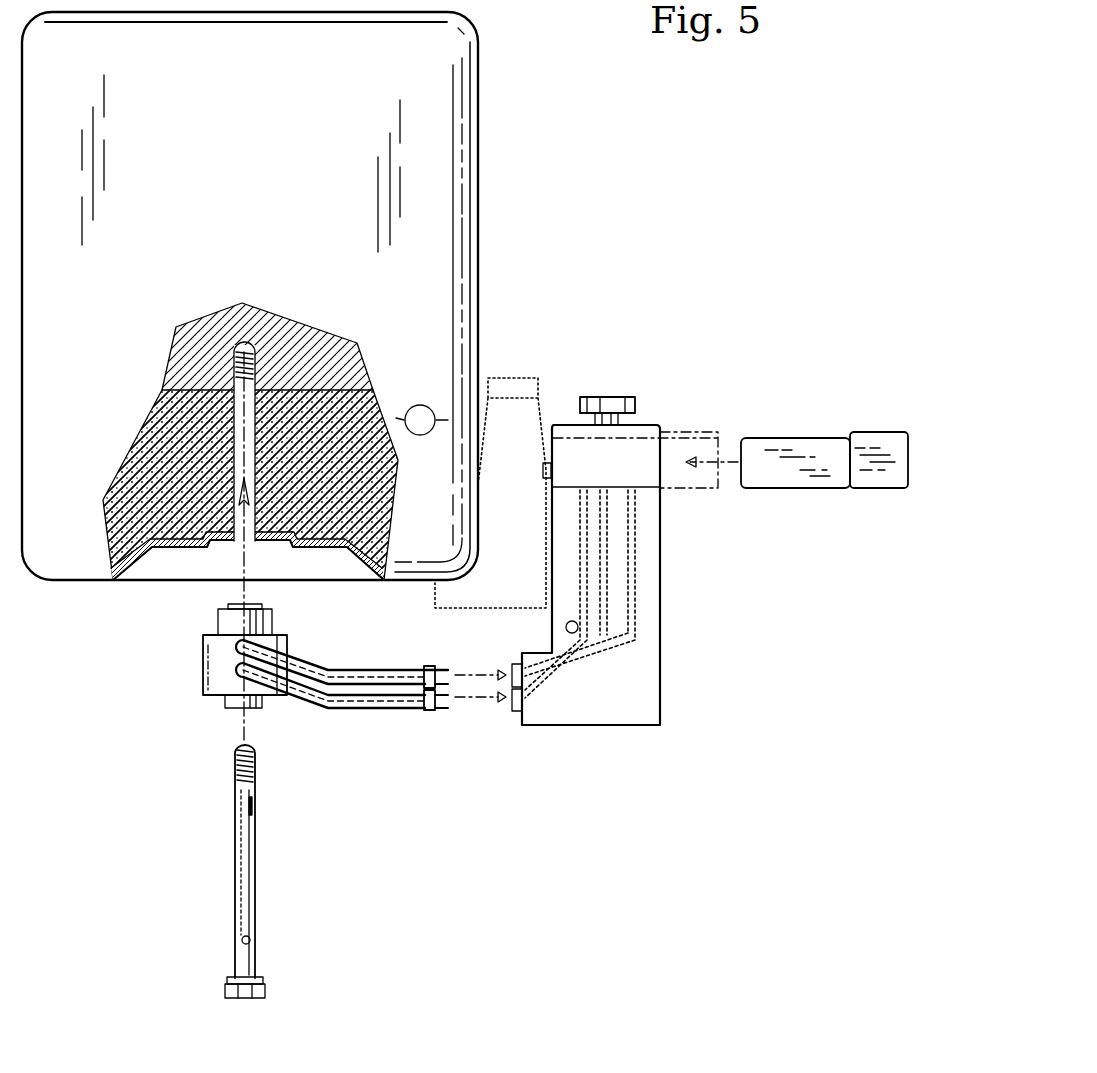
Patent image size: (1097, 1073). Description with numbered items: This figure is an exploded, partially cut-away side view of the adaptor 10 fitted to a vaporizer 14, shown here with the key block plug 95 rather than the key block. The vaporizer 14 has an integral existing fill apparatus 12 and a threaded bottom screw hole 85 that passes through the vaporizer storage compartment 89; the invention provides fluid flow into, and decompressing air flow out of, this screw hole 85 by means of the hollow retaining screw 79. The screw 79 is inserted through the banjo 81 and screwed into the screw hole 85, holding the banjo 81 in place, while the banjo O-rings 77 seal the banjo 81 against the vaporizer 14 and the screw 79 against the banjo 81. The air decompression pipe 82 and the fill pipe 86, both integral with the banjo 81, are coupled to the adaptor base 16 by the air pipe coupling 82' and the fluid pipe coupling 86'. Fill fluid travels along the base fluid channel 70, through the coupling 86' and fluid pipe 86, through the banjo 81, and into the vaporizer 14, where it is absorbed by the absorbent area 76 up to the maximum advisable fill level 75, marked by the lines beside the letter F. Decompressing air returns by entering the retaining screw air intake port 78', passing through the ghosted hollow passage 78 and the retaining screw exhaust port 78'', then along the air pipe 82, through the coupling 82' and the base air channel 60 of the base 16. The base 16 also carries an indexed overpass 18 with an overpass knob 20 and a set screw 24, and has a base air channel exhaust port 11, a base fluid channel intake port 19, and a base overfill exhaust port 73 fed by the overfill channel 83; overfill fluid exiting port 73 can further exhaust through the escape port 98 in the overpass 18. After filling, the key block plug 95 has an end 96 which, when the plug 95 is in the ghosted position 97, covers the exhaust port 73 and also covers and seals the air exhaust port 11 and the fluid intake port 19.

The adaptor 10 is at (662, 364).
The base air channel exhaust port 11 is at (628, 492).
The integral existing fill apparatus 12 is at (470, 608).
The vaporizer 14 is at (260, 111).
The adaptor base 16 is at (607, 696).
The indexed overpass 18 is at (553, 425).
The base fluid channel intake port 19 is at (605, 490).
The overpass knob 20 is at (604, 397).
The set screw 24 is at (565, 628).
The base air channel 60 is at (607, 580).
The base fluid channel 70 is at (637, 533).
The base overfill exhaust port 73 is at (582, 492).
The maximum advisable fill level 75 is at (395, 417).
The absorbent area 76 is at (110, 562).
The banjo O-rings 77 is at (228, 606).
The hollow passage 78 is at (210, 861).
The retaining screw air intake port 78' is at (293, 812).
The retaining screw exhaust port 78'' is at (293, 942).
The hollow retaining screw 79 is at (308, 882).
The banjo 81 is at (272, 620).
The air decompression pipe 82 is at (330, 723).
The air pipe coupling 82' is at (448, 738).
The overfill channel 83 is at (587, 595).
The threaded bottom screw hole 85 is at (194, 325).
The fill pipe 86 is at (342, 695).
The fluid pipe coupling 86' is at (416, 722).
The vaporizer storage compartment 89 is at (336, 551).
The key block plug 95 is at (826, 413).
The end of key block plug 96 is at (734, 440).
The ghosted position 97 is at (700, 432).
The escape port 98 is at (543, 473).